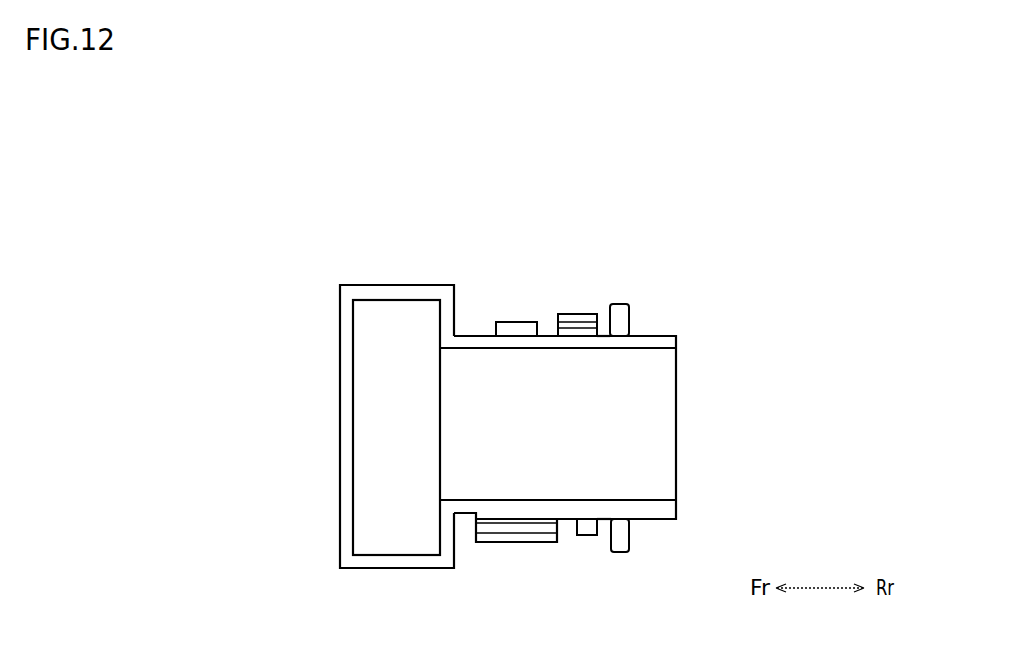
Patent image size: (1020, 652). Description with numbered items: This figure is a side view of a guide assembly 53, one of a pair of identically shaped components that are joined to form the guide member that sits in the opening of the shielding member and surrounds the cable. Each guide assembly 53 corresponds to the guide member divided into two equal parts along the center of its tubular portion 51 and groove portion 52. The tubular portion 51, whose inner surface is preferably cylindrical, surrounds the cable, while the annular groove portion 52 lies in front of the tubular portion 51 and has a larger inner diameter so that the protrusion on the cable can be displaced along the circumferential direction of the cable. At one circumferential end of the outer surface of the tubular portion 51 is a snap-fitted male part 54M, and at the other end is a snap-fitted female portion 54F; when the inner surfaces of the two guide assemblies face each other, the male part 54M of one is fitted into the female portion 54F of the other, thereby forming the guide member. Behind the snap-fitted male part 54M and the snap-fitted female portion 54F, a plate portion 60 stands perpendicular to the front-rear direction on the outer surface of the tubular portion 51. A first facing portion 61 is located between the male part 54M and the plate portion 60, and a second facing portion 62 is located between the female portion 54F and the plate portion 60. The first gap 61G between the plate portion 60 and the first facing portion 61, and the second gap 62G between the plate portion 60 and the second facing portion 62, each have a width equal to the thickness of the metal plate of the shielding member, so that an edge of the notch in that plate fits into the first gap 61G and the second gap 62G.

The tubular portion 51 is at (663, 336).
The groove portion 52 is at (398, 284).
The guide assembly 53 is at (258, 356).
The snap-fitted male part 54M is at (505, 322).
The snap-fitted female portion 54F is at (518, 542).
The plate portion 60 is at (620, 304).
The first facing portion 61 is at (571, 313).
The first gap 61G is at (604, 324).
The second facing portion 62 is at (581, 536).
The second gap 62G is at (602, 530).